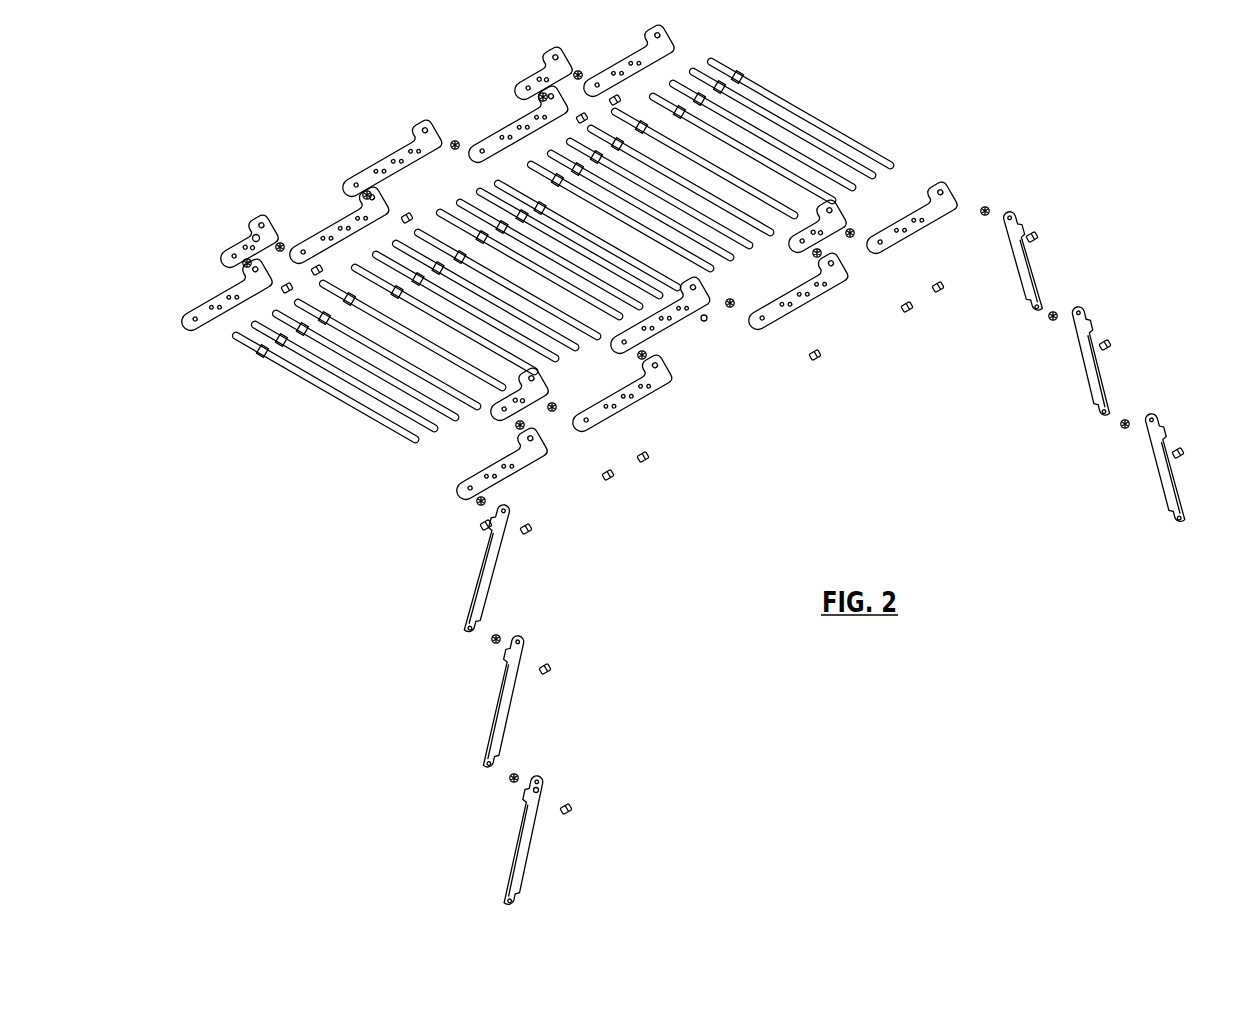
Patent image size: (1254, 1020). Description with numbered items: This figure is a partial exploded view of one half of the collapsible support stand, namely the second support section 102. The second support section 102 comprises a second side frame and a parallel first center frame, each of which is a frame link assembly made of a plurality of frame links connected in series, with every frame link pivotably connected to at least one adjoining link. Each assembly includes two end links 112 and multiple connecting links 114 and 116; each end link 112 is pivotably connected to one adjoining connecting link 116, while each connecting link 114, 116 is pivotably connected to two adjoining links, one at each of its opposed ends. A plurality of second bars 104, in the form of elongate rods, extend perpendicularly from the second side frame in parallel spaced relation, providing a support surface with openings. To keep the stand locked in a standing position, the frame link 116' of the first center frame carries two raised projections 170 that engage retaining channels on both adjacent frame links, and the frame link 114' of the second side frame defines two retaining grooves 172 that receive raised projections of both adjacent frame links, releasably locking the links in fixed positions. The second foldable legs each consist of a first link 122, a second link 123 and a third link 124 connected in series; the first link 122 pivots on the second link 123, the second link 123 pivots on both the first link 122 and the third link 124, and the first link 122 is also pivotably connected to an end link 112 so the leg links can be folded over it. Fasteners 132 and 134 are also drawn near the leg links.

The second support section 102 is at (319, 435).
The second bars 104 is at (801, 102).
The end link 112 is at (632, 40).
The connecting link 114 is at (561, 265).
The frame link 114' is at (723, 355).
The connecting link 116 is at (714, 264).
The frame link 116' is at (215, 223).
The first link 122 is at (486, 550).
The second link 123 is at (494, 699).
The third link 124 is at (516, 846).
The bolt 132 is at (554, 669).
The bolt 134 is at (541, 796).
The projection 170 is at (258, 229).
The groove 172 is at (709, 312).